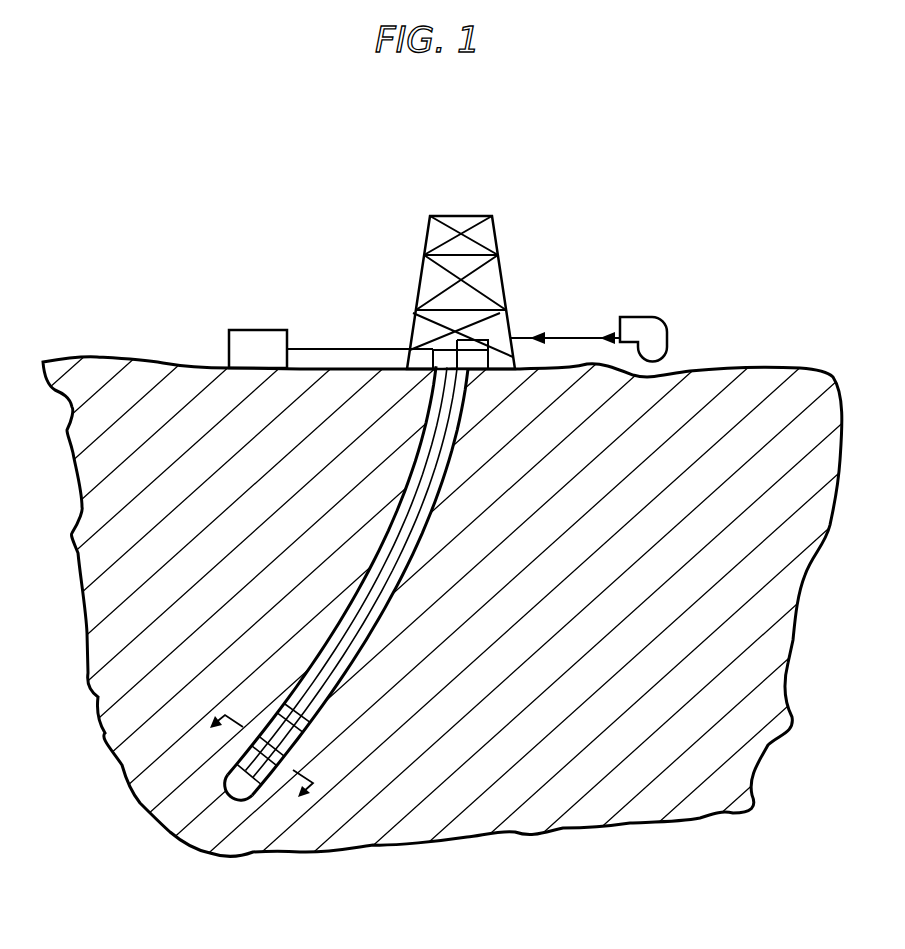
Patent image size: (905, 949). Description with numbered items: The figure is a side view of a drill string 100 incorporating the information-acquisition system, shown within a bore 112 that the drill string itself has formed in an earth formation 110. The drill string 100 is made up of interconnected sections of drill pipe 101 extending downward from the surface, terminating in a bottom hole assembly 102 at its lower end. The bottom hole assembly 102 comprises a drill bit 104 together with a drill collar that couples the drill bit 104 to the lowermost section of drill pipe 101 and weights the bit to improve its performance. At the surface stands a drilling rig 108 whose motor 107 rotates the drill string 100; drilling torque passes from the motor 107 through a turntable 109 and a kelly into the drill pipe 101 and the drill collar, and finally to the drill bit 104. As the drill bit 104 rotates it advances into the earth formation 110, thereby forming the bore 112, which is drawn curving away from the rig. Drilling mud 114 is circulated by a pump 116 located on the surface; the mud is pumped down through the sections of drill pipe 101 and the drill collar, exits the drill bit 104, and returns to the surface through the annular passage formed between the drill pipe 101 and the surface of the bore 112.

The drill string 100 is at (210, 787).
The drill pipe 101 is at (433, 468).
The bottom hole assembly 102 is at (313, 753).
The drill bit 104 is at (234, 799).
The motor 107 is at (276, 360).
The drilling rig 108 is at (418, 275).
The turntable 109 is at (418, 357).
The earth formation 110 is at (592, 530).
The bore 112 is at (365, 592).
The drilling mud 114 is at (557, 334).
The pump 116 is at (663, 320).